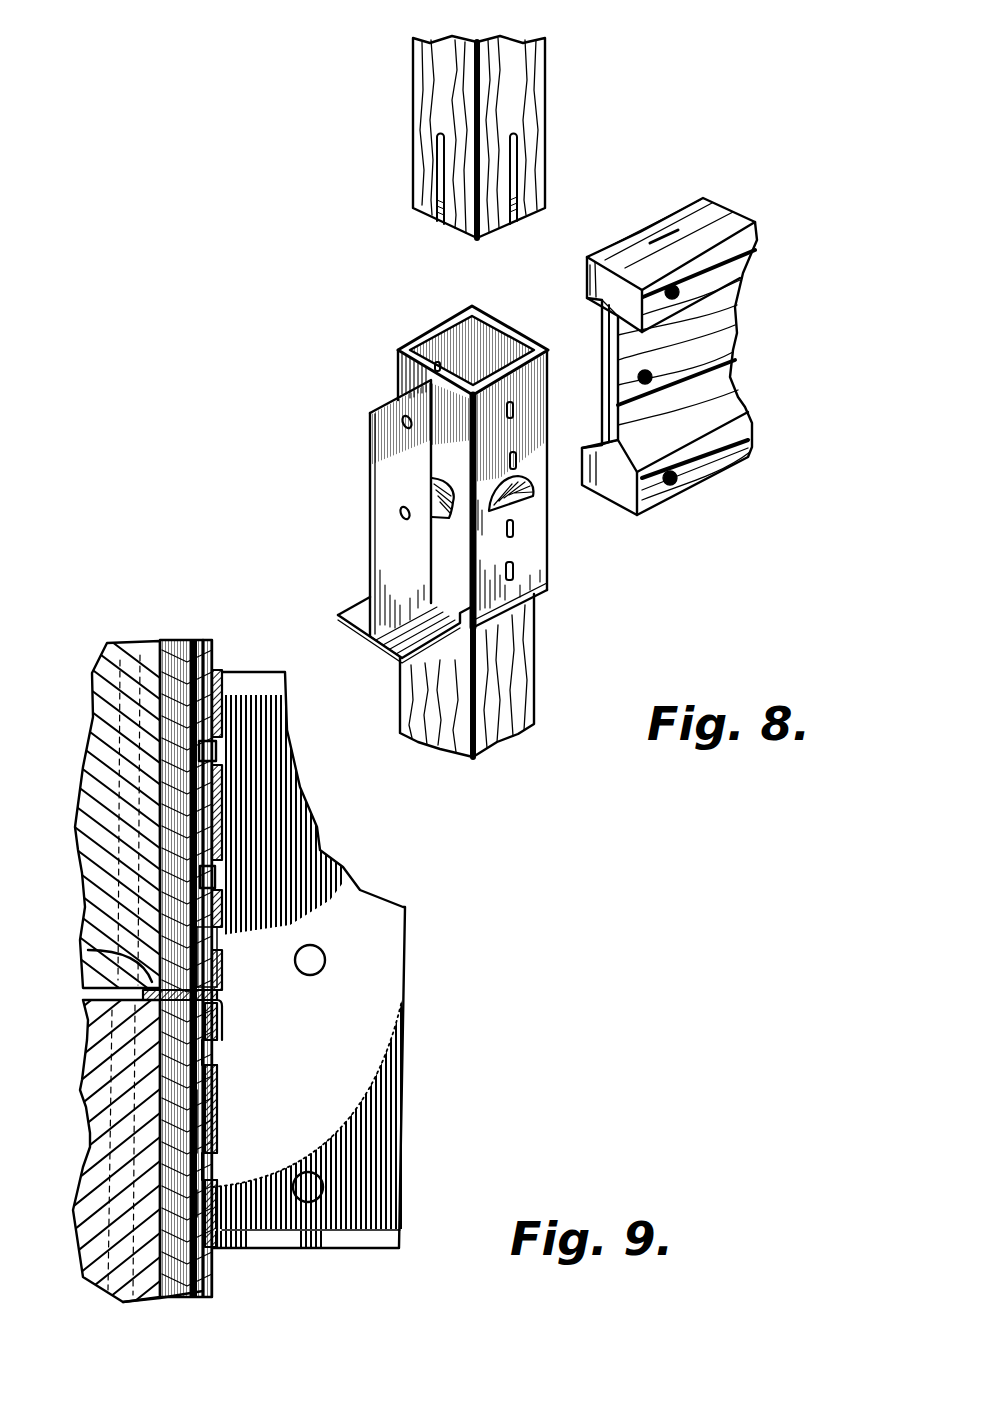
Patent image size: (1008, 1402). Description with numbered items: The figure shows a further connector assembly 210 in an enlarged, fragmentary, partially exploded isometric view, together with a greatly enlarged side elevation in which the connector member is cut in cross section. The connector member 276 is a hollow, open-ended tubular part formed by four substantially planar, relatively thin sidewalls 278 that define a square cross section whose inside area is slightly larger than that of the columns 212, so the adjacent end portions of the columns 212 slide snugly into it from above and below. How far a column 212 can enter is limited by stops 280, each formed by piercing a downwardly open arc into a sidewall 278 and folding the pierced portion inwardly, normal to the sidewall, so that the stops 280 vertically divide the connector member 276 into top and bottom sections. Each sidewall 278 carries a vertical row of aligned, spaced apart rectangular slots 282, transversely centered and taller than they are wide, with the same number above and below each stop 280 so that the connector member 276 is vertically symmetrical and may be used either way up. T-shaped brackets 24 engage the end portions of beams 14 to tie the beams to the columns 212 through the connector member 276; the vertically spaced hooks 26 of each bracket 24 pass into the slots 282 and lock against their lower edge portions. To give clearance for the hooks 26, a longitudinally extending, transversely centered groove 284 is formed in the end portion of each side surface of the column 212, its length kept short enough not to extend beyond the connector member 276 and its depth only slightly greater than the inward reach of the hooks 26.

In FIG. 8, the beam 14 is at (722, 345).
In FIG. 8, the T-shaped bracket 24 is at (374, 478).
In FIG. 9, the T-shaped bracket 24 is at (407, 926).
In FIG. 9, the hook 26 is at (216, 772).
In FIG. 8, the connector assembly 210 is at (706, 139).
In FIG. 8, the column 212 is at (540, 70).
In FIG. 9, the column 212 is at (160, 644).
In FIG. 8, the connector member 276 is at (352, 375).
In FIG. 9, the connector member 276 is at (240, 652).
In FIG. 8, the sidewall 278 is at (398, 367).
In FIG. 8, the stop 280 is at (447, 490).
In FIG. 9, the stop 280 is at (88, 950).
In FIG. 8, the slot 282 is at (517, 571).
In FIG. 9, the slot 282 is at (224, 752).
In FIG. 8, the groove 284 is at (440, 157).
In FIG. 9, the groove 284 is at (218, 946).